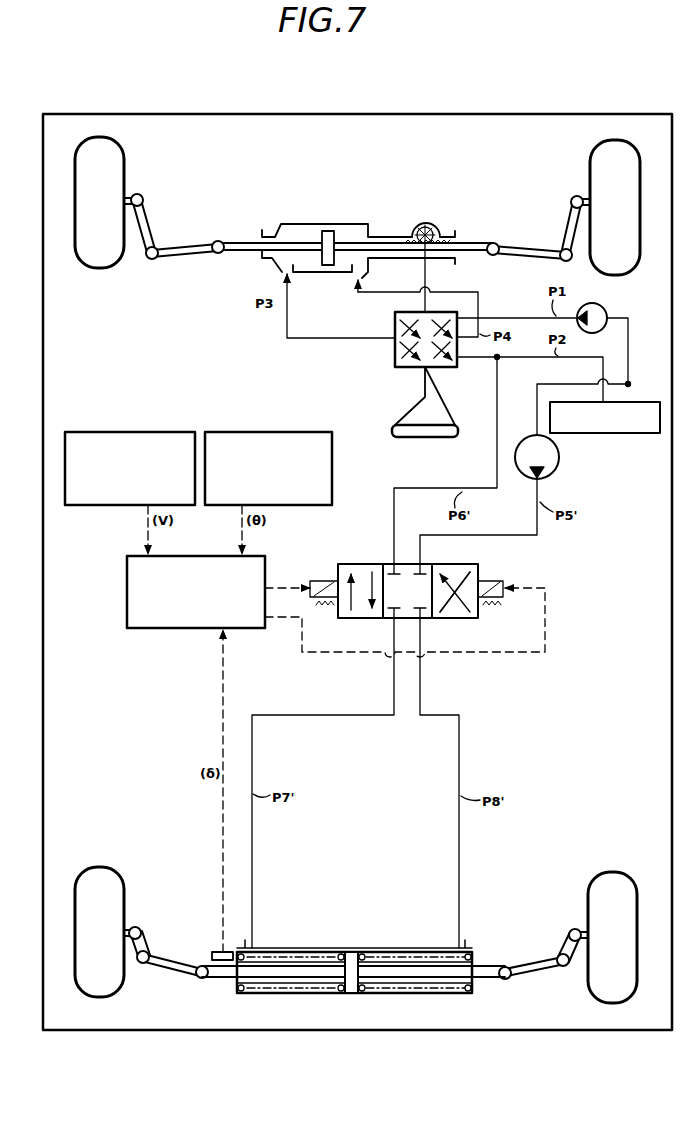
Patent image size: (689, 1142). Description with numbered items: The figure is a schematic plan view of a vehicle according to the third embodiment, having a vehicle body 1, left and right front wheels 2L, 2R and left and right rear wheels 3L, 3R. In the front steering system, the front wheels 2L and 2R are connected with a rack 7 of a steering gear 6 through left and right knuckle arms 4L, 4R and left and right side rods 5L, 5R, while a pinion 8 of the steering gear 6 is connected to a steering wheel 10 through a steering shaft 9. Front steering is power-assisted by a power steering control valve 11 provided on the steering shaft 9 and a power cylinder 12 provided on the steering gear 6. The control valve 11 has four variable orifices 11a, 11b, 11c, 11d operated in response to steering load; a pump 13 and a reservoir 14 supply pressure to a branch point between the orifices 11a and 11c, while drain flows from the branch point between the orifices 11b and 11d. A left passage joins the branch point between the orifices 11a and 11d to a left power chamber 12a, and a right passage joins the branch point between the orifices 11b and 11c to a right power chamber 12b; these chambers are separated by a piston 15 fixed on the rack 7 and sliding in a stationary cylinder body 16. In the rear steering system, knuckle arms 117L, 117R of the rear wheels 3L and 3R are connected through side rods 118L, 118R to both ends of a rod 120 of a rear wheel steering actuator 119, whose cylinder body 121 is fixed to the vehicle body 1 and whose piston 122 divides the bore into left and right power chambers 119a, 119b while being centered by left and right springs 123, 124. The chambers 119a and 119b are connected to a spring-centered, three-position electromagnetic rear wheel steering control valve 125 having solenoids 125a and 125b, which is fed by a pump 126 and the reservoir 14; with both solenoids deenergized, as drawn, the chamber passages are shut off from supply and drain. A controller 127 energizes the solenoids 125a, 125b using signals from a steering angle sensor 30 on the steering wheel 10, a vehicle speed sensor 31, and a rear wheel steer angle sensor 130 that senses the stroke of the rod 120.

The vehicle body 1 is at (556, 110).
The left front wheel 2L is at (118, 152).
The right front wheel 2R is at (596, 148).
The left rear wheel 3L is at (90, 866).
The right rear wheel 3R is at (622, 870).
The left knuckle arm 4L is at (146, 212).
The right knuckle arm 4R is at (568, 212).
The left side rod 5L is at (162, 262).
The right side rod 5R is at (530, 247).
The steering gear 6 is at (440, 216).
The rack 7 is at (240, 240).
The pinion 8 is at (422, 224).
The steering shaft 9 is at (432, 272).
The steering wheel 10 is at (395, 437).
The power steering control valve 11 is at (388, 337).
The variable orifice 11a is at (405, 326).
The variable orifice 11b is at (446, 352).
The variable orifice 11c is at (442, 322).
The variable orifice 11d is at (405, 356).
The power cylinder 12 is at (358, 207).
The left power chamber 12a is at (296, 222).
The right power chamber 12b is at (424, 226).
The pump 13 is at (607, 307).
The reservoir 14 is at (638, 435).
The piston 15 is at (327, 230).
The cylinder body 16 is at (354, 226).
The steering angle sensor 30 is at (251, 432).
The vehicle speed sensor 31 is at (124, 432).
The left knuckle arm 117L is at (150, 950).
The right knuckle arm 117R is at (562, 940).
The left side rod 118L is at (172, 976).
The right side rod 118R is at (538, 976).
The rear wheel steering actuator 119 is at (353, 957).
The left power chamber 119a is at (294, 955).
The right power chamber 119b is at (430, 955).
The rod 120 is at (226, 988).
The cylinder body 121 is at (404, 955).
The piston 122 is at (352, 950).
The left spring 123 is at (312, 950).
The right spring 124 is at (386, 952).
The rear wheel steering control valve 125 is at (419, 586).
The solenoid 125a is at (505, 598).
The solenoid 125b is at (328, 580).
The pump 126 is at (558, 466).
The controller 127 is at (126, 598).
The rear wheel steer angle sensor 130 is at (214, 951).